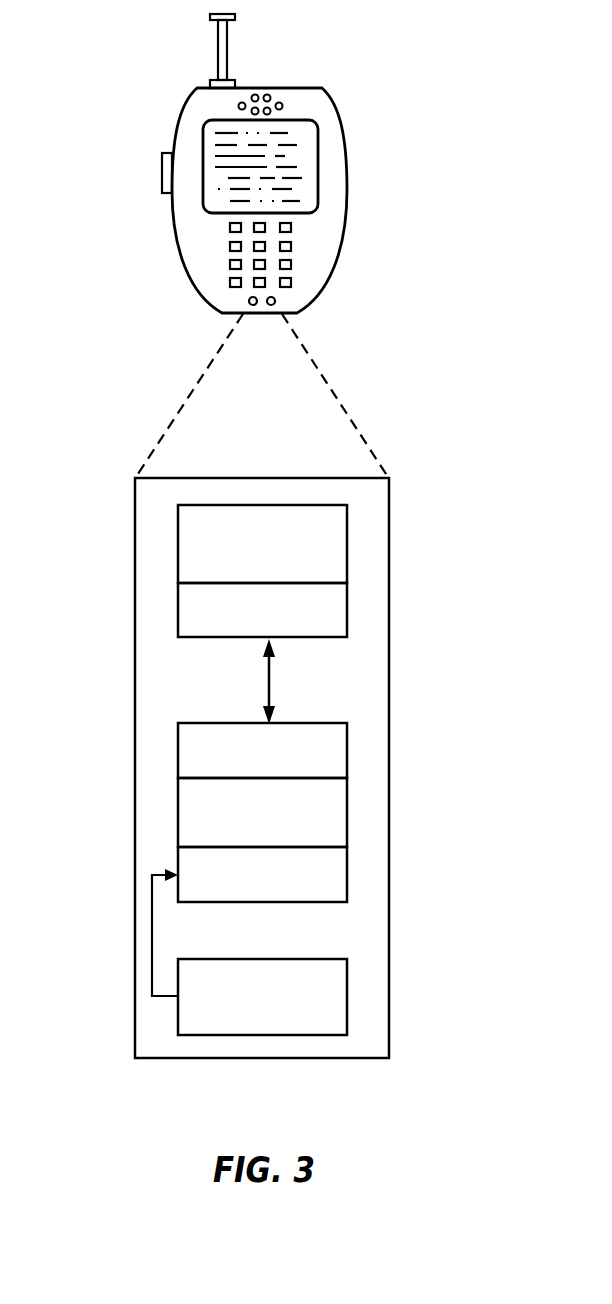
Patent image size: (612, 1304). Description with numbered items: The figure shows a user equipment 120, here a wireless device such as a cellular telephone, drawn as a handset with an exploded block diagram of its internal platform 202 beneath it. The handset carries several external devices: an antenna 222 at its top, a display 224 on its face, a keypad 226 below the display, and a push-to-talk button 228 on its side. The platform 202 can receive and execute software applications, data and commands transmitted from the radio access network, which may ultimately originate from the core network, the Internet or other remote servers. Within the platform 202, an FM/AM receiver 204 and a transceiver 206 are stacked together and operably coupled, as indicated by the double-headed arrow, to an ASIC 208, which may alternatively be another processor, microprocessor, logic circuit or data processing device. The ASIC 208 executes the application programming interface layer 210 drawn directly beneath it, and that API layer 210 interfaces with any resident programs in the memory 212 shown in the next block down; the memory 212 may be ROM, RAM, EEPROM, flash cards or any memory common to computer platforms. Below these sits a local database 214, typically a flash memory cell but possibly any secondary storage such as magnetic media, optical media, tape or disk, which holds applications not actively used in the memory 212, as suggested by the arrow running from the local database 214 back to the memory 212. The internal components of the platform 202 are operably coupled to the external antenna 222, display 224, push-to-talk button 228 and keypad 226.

The user equipment 120 is at (324, 300).
The antenna 222 is at (228, 37).
The display 224 is at (318, 167).
The keypad 226 is at (292, 246).
The push-to-talk button 228 is at (162, 175).
The platform 202 is at (135, 657).
The FM/AM receiver 204 is at (347, 541).
The transceiver 206 is at (347, 605).
The ASIC 208 is at (347, 750).
The application programming interface layer 210 is at (347, 812).
The memory 212 is at (347, 875).
The local database 214 is at (347, 995).